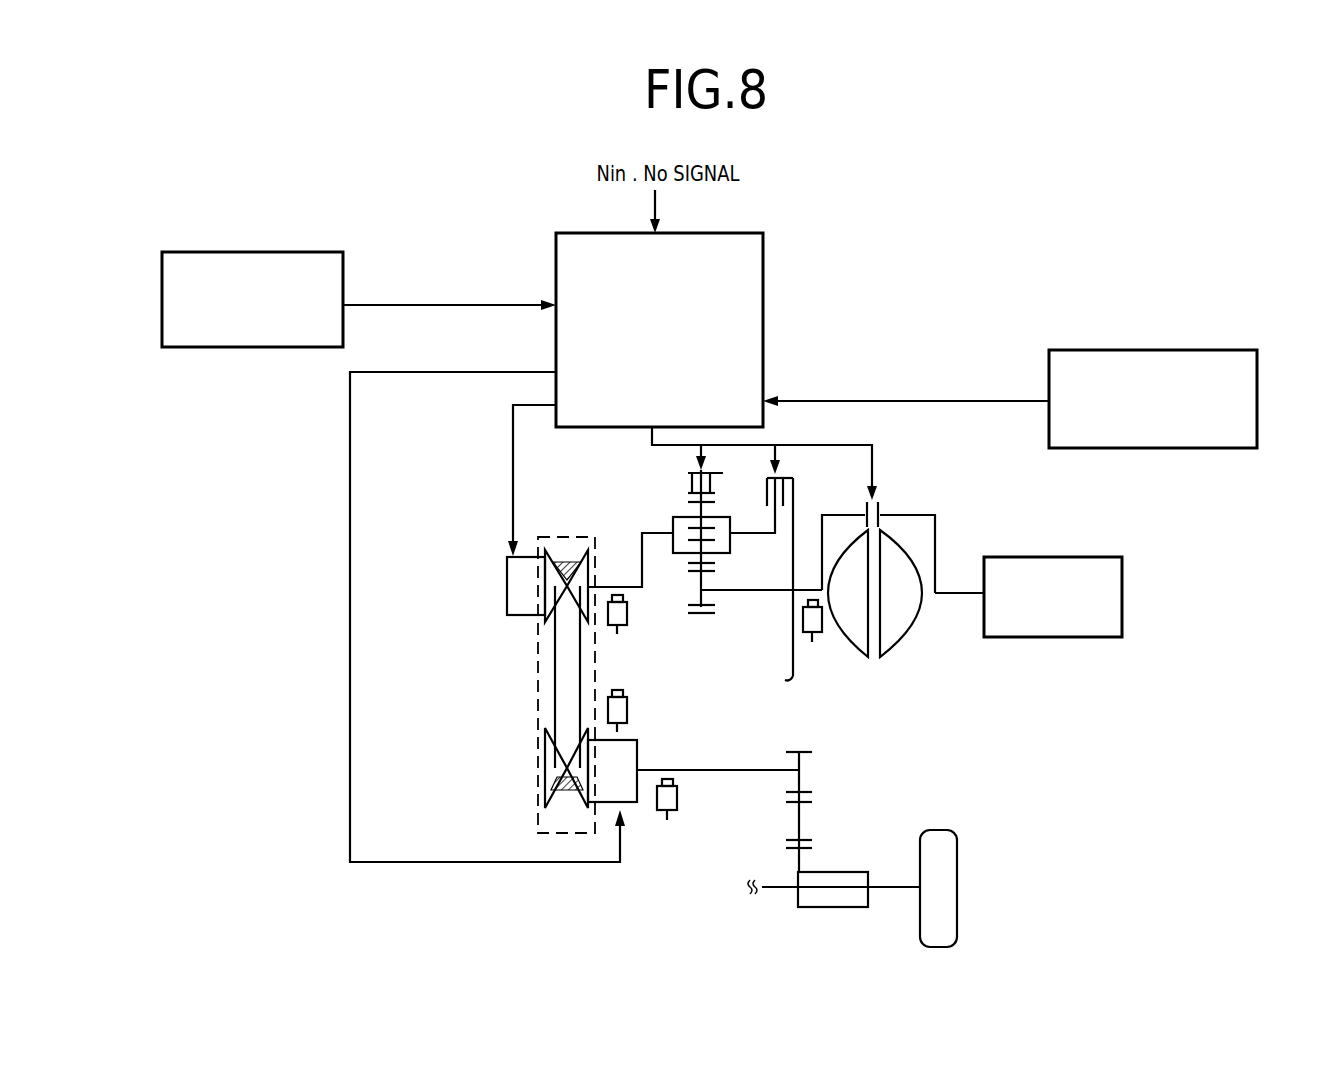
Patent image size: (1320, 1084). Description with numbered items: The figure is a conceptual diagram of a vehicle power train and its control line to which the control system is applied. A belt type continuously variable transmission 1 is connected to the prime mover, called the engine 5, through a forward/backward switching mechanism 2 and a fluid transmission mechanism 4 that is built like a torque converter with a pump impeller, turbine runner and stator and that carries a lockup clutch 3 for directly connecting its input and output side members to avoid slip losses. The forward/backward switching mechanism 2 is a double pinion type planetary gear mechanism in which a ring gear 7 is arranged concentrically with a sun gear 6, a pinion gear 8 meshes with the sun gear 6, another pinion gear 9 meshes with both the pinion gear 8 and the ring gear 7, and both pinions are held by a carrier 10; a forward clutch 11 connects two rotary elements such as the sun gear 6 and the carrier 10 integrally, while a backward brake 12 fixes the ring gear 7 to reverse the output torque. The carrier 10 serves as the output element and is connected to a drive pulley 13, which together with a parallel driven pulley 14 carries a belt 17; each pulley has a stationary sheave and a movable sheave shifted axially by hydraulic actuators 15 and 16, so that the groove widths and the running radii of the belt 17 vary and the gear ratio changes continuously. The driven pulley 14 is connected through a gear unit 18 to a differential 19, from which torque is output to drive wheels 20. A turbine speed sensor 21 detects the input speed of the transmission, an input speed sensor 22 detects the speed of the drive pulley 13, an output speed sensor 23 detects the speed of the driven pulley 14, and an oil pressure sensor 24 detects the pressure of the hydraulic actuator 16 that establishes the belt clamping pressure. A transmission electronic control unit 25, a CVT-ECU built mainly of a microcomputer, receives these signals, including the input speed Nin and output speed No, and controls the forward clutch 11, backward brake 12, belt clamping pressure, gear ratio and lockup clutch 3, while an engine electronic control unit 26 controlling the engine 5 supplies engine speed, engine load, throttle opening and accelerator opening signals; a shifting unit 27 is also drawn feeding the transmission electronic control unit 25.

The belt type continuously variable transmission 1 is at (559, 520).
The forward/backward switching mechanism 2 is at (741, 575).
The lockup clutch 3 is at (880, 504).
The fluid transmission mechanism 4 is at (882, 592).
The prime mover 5 is at (1050, 565).
The sun gear 6 is at (714, 605).
The ring gear 7 is at (690, 492).
The pinion gear 8 is at (712, 566).
The pinion gear 9 is at (688, 502).
The carrier 10 is at (756, 533).
The forward clutch 11 is at (794, 484).
The backward brake 12 is at (712, 476).
The drive pulley 13 is at (560, 602).
The driven pulley 14 is at (554, 762).
The hydraulic actuator 15 is at (520, 590).
The hydraulic actuator 16 is at (629, 752).
The belt 17 is at (570, 564).
The gear unit 18 is at (832, 790).
The differential 19 is at (826, 874).
The drive wheels 20 is at (941, 838).
The turbine speed sensor 21 is at (818, 638).
The input speed sensor 22 is at (626, 627).
The output speed sensor 23 is at (674, 816).
The oil pressure sensor 24 is at (615, 690).
The transmission electronic control unit 25 is at (578, 242).
The engine electronic control unit 26 is at (1118, 360).
The shifting unit 27 is at (250, 266).